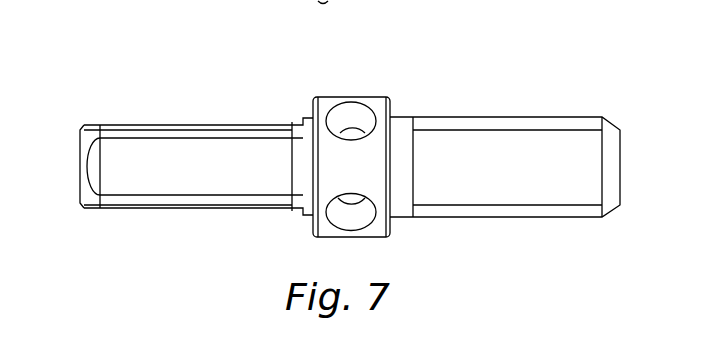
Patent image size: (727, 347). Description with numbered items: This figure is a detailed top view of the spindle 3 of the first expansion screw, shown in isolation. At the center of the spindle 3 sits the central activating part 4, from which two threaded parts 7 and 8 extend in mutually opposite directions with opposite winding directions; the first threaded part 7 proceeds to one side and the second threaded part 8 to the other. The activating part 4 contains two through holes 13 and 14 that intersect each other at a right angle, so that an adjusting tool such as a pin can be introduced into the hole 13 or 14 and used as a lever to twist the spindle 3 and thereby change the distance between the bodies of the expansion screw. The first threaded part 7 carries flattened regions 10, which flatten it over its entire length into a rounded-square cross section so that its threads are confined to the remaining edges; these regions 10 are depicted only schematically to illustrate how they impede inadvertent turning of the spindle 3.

The spindle 3 is at (552, 92).
The central activating part 4 is at (377, 150).
The first threaded part 7 is at (93, 198).
The second threaded part 8 is at (577, 210).
The flattened regions 10 is at (195, 175).
The through hole 13 is at (363, 215).
The through hole 14 is at (362, 113).